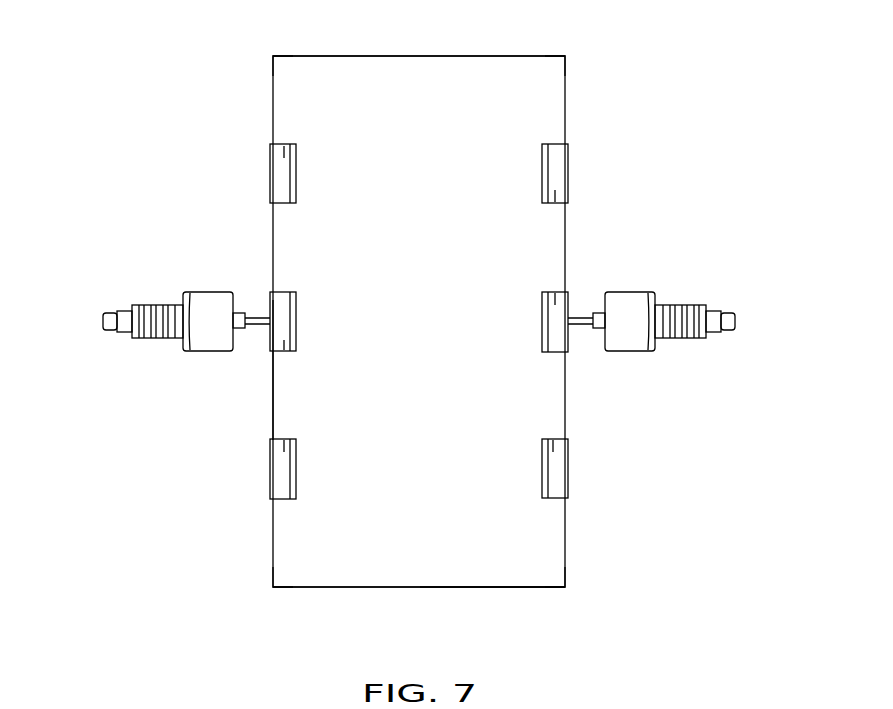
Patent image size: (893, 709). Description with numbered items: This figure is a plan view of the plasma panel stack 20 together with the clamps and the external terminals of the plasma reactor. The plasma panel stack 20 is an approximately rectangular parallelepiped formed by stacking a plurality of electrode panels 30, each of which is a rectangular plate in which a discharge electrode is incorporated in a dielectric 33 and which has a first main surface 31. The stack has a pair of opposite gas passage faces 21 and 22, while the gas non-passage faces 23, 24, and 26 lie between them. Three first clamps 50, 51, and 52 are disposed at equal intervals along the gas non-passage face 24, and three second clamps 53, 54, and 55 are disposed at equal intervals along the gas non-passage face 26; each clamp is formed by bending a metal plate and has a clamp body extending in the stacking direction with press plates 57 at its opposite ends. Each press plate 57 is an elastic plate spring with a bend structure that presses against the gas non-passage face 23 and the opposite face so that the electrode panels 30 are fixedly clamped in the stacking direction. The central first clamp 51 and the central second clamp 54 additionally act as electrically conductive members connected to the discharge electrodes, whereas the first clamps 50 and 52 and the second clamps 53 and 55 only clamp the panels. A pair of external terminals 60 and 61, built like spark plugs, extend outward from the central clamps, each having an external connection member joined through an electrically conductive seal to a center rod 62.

The plasma panel stack 20 is at (565, 56).
The gas passage face 21 is at (324, 590).
The gas passage face 22 is at (470, 55).
The gas non-passage face 23 is at (321, 60).
The gas non-passage face 24 is at (568, 584).
The gas non-passage face 26 is at (270, 584).
The electrode panel 30 is at (395, 57).
The first main surface 31 is at (433, 255).
The dielectric 33 is at (500, 588).
The first clamp 50 is at (568, 471).
The first clamp 51 is at (566, 297).
The first clamp 52 is at (568, 172).
The second clamp 53 is at (270, 466).
The second clamp 54 is at (270, 300).
The second clamp 55 is at (270, 173).
The press plate 57 is at (284, 152).
The external terminal 60 is at (737, 320).
The external terminal 61 is at (103, 320).
The center rod 62 is at (259, 324).